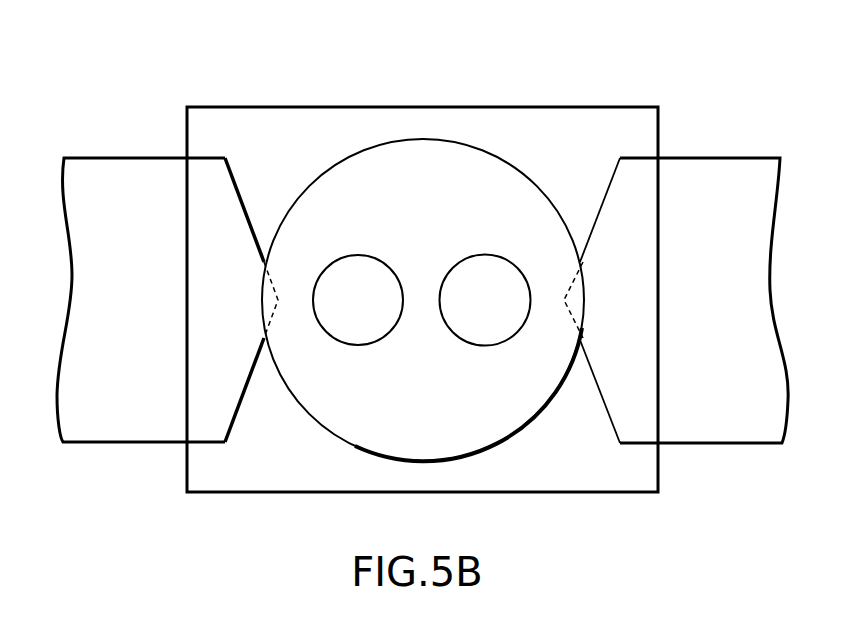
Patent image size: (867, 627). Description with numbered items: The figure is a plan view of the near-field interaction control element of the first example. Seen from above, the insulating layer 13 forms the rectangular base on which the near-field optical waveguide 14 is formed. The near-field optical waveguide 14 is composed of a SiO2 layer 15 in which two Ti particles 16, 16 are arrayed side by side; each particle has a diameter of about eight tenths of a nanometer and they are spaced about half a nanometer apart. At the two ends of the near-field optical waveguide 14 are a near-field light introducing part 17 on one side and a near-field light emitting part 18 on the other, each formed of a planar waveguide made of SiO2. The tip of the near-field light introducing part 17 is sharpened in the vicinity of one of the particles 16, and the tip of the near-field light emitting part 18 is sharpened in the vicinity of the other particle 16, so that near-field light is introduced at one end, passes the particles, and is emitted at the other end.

The insulating layer 13 is at (598, 122).
The near-field optical waveguide 14 is at (339, 146).
The SiO2 layer 15 is at (420, 450).
The Ti particles 16 is at (355, 338).
The near-field light introducing part 17 is at (118, 166).
The near-field light emitting part 18 is at (742, 166).